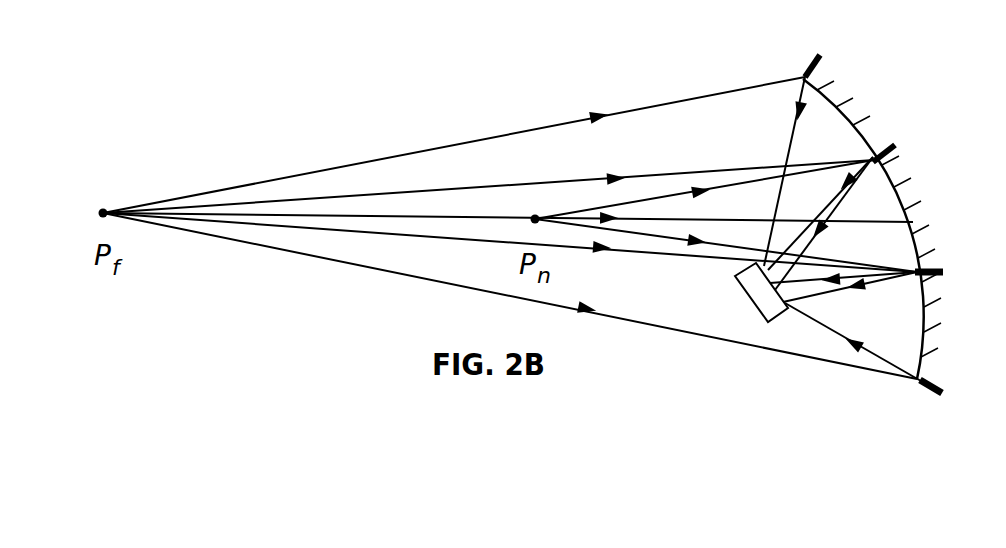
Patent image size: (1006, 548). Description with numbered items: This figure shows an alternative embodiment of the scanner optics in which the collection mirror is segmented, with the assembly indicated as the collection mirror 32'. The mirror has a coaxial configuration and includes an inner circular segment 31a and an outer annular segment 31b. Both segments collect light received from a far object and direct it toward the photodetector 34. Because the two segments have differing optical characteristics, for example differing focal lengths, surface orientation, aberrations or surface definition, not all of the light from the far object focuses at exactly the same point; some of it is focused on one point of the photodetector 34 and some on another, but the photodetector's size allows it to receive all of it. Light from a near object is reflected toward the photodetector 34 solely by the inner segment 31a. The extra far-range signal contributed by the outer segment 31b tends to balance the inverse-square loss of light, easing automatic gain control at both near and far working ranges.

The curved reflector array 32' is at (883, 205).
The inner circular segment 31a is at (883, 188).
The outer annular segment 31b is at (922, 317).
The photodetector 34 is at (748, 297).